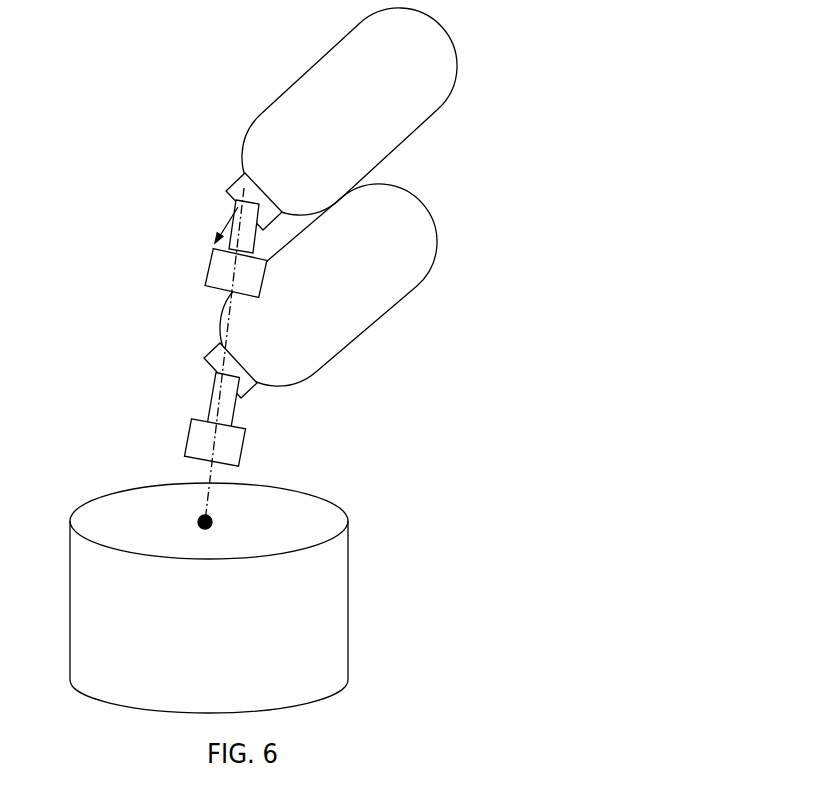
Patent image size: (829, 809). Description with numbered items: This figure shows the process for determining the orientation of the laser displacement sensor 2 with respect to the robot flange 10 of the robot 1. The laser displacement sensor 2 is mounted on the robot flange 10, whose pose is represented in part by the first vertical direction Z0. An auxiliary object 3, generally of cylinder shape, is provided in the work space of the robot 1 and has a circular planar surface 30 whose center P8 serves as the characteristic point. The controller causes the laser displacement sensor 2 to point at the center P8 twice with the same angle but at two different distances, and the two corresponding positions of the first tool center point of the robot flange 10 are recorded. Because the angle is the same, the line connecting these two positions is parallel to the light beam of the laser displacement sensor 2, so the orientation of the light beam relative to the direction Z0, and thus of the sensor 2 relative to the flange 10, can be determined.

The robot 1 is at (310, 92).
The robot flange 10 is at (245, 197).
The laser displacement sensor 2 is at (225, 272).
The first vertical direction Z0 is at (216, 225).
The auxiliary object 3 is at (100, 567).
The planar surface 30 is at (112, 513).
The center of the planar surface P8 is at (190, 521).